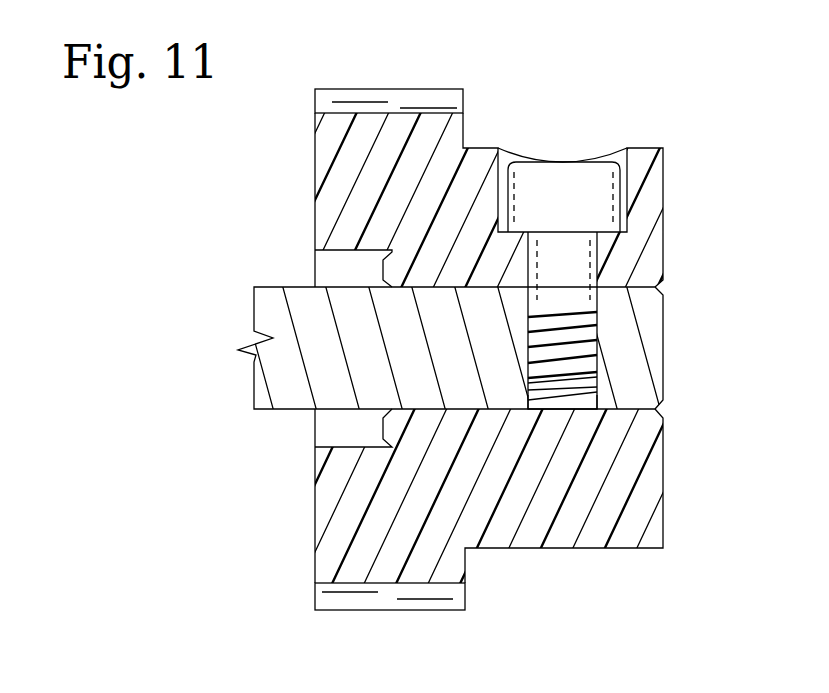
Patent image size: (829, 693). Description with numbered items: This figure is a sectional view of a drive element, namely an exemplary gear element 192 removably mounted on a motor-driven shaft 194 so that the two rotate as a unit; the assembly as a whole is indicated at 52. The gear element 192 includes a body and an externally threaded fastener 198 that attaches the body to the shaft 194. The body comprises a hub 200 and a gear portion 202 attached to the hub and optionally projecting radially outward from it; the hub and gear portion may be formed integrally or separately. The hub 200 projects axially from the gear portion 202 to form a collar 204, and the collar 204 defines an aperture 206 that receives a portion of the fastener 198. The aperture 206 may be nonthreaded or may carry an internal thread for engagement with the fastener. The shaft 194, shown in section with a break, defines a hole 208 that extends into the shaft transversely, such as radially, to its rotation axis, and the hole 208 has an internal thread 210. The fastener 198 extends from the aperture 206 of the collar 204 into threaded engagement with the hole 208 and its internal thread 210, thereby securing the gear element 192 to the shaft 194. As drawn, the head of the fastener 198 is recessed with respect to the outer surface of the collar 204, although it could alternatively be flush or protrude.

The pulley assembly 52 is at (549, 46).
The gear element 192 is at (549, 82).
The motor-driven shaft 194 is at (665, 348).
The externally threaded fastener 198 is at (562, 162).
The hub 200 is at (482, 549).
The gear portion 202 is at (380, 611).
The collar 204 is at (550, 549).
The aperture 206 is at (596, 254).
The hole 208 is at (596, 313).
The internal thread 210 is at (549, 406).